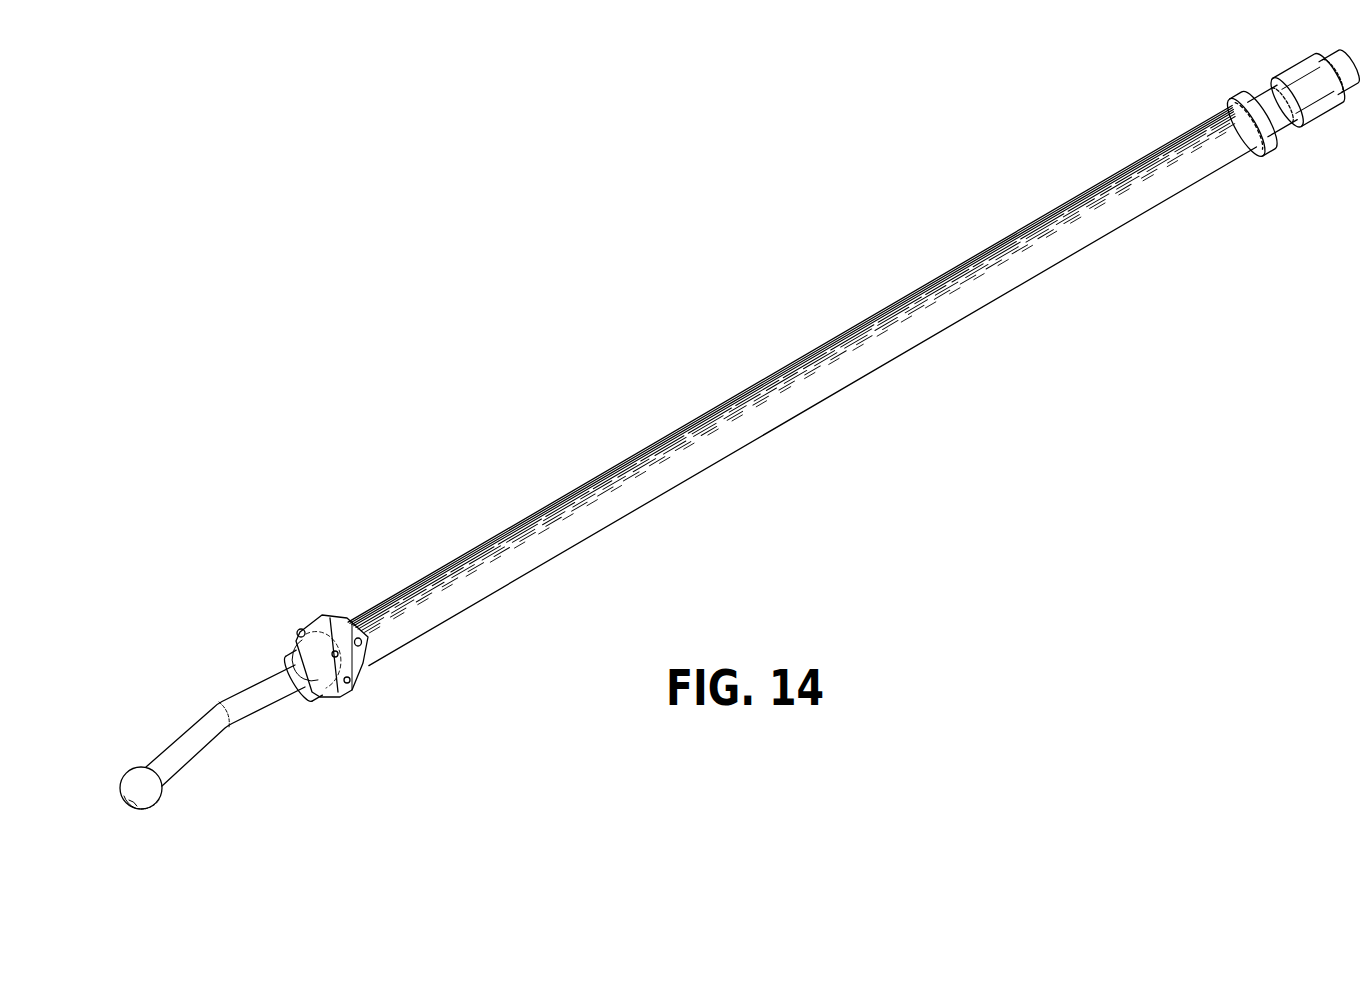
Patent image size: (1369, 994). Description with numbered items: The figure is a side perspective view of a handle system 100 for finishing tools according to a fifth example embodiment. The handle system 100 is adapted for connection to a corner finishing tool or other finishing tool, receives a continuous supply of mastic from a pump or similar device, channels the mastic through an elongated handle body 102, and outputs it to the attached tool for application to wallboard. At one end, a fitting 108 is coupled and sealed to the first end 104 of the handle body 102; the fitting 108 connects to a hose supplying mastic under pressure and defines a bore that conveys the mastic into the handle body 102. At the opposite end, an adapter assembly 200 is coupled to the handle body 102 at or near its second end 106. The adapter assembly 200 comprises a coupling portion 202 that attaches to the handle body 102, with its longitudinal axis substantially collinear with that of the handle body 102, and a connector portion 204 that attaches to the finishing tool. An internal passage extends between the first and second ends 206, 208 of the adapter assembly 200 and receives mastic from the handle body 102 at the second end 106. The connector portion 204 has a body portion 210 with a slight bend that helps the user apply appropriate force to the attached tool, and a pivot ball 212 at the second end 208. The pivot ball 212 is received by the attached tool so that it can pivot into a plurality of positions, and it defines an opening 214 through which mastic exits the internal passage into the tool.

The handle system 100 is at (715, 274).
The handle body 102 is at (683, 430).
The first end 104 is at (1230, 92).
The second end 106 is at (313, 607).
The fitting 108 is at (1323, 90).
The adapter assembly 200 is at (253, 771).
The coupling portion 202 is at (332, 711).
The connector portion 204 is at (202, 698).
The first end 206 is at (352, 697).
The second end 208 is at (160, 815).
The body portion 210 is at (257, 677).
The pivot ball 212 is at (146, 788).
The opening 214 is at (130, 803).